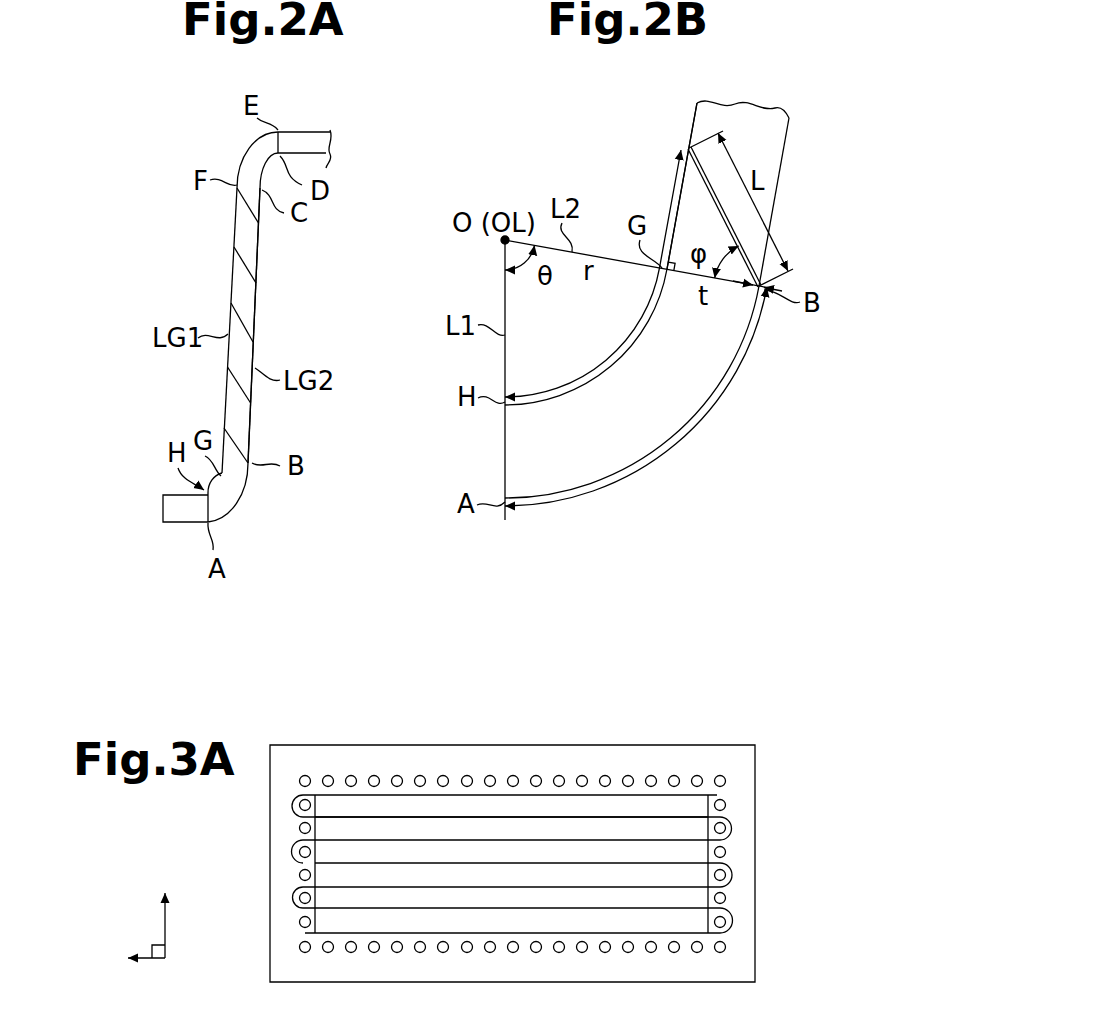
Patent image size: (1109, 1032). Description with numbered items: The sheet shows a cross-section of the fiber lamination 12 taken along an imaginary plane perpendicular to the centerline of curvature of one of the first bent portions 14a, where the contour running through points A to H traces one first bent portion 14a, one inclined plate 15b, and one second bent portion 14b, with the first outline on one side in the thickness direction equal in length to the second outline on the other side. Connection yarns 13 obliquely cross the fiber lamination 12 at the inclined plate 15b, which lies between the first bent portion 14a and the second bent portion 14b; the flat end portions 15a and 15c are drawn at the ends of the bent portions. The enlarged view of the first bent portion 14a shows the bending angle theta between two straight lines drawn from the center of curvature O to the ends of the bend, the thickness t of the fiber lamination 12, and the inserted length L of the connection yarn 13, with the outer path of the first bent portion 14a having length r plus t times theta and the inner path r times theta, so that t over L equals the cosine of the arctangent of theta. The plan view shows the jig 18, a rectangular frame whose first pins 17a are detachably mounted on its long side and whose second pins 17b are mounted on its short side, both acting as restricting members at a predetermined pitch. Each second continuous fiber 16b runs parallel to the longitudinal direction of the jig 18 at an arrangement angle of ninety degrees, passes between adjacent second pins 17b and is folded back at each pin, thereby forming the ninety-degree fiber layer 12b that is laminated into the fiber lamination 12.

In FIG. 2A, the fiber lamination 12 is at (199, 283).
In FIG. 2B, the fiber lamination 12 is at (787, 226).
In FIG. 2A, the connection yarn 13 is at (286, 140).
In FIG. 2B, the connection yarn 13 is at (706, 188).
In FIG. 2A, the first bent portion 14a is at (237, 497).
In FIG. 2B, the first bent portion 14a is at (638, 455).
In FIG. 2A, the second bent portion 14b is at (247, 150).
In FIG. 2A, the lower flat portion 15a is at (178, 522).
In FIG. 2A, the inclined plate 15b is at (257, 308).
In FIG. 2B, the inclined plate 15b is at (783, 150).
In FIG. 2A, the upper flat portion 15c is at (316, 132).
In FIG. 3A, the 90-degree fiber layer 12b is at (435, 805).
In FIG. 3A, the second continuous fiber 16b is at (527, 817).
In FIG. 3A, the first pins 17a is at (674, 776).
In FIG. 3A, the second pins 17b is at (299, 805).
In FIG. 3A, the jig 18 is at (752, 775).